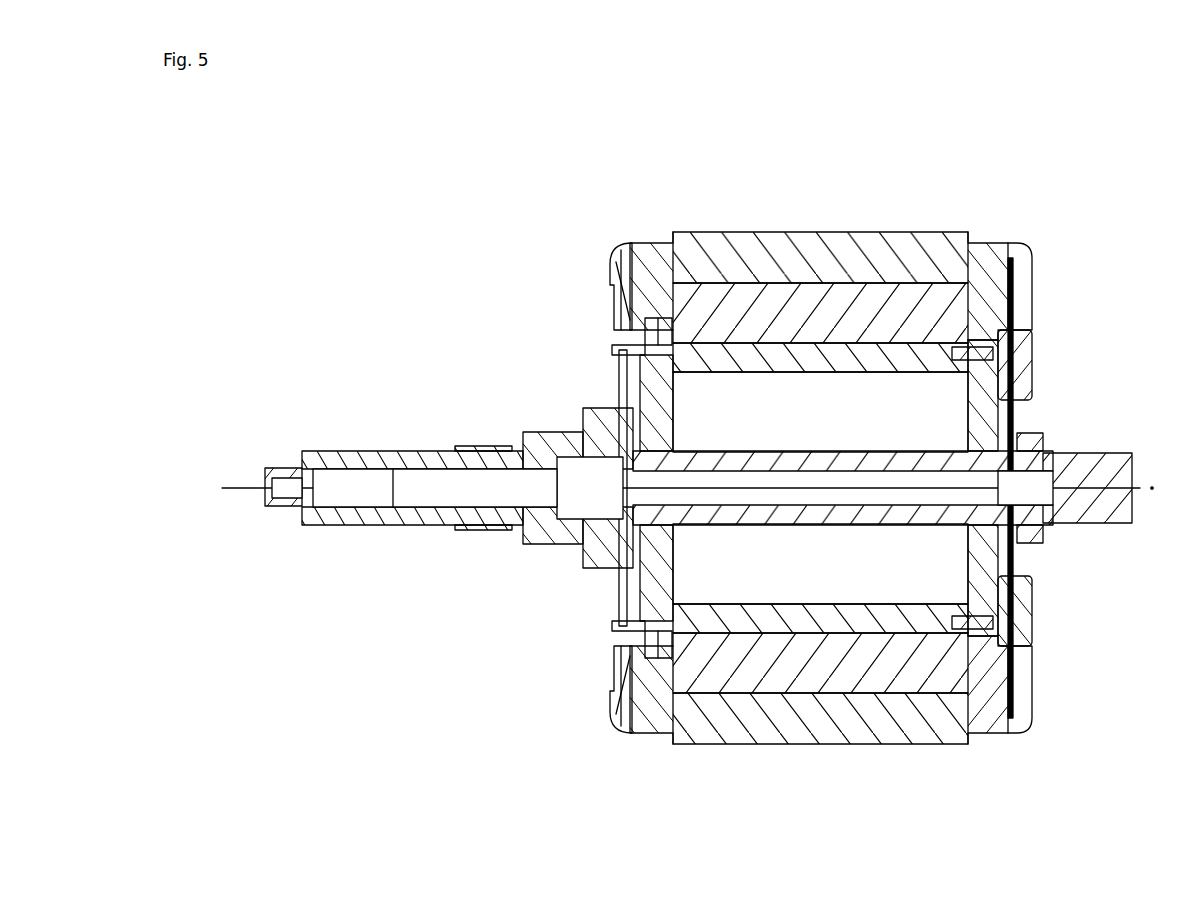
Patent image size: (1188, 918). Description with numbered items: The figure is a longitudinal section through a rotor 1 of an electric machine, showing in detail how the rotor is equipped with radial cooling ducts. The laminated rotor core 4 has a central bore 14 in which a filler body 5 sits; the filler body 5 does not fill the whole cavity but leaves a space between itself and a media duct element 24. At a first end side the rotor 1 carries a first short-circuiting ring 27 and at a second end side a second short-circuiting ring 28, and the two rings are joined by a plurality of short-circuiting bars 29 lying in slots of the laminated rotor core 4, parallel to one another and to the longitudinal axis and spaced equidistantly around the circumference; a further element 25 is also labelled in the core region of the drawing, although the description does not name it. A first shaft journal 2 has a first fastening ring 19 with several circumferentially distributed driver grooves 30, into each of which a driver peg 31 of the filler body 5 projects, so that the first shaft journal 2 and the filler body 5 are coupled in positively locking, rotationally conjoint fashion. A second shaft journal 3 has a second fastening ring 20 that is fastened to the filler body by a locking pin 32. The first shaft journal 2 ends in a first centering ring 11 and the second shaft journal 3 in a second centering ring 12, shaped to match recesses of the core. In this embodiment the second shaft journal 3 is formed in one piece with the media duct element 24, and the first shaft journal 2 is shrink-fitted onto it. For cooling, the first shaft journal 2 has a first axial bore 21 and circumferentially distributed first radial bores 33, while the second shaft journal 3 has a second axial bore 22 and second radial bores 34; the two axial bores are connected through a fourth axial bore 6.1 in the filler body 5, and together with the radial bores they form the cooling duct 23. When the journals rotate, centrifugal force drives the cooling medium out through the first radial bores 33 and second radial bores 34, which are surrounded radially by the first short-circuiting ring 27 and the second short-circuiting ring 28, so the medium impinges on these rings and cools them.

The rotor 1 is at (356, 272).
The first shaft journal 2 is at (412, 510).
The second shaft journal 3 is at (1082, 512).
The laminated rotor core 4 is at (640, 245).
The filler body 5 is at (862, 372).
The fourth axial bore 6.1 is at (780, 494).
The first centering ring 11 is at (680, 596).
The second centering ring 12 is at (963, 378).
The central bore 14 is at (752, 345).
The first fastening ring 19 is at (662, 580).
The second fastening ring 20 is at (997, 690).
The first axial bore 21 is at (494, 493).
The second axial bore 22 is at (1030, 478).
The cooling duct 23 is at (260, 493).
The media duct element 24 is at (913, 515).
The stator winding 25 is at (797, 405).
The first short-circuiting ring 27 is at (628, 250).
The second short-circuiting ring 28 is at (1012, 262).
The short-circuiting bars 29 is at (878, 268).
The driver grooves 30 is at (620, 352).
The driver peg 31 is at (650, 320).
The locking pin 32 is at (1020, 335).
The first radial bores 33 is at (626, 528).
The second radial bores 34 is at (1030, 540).